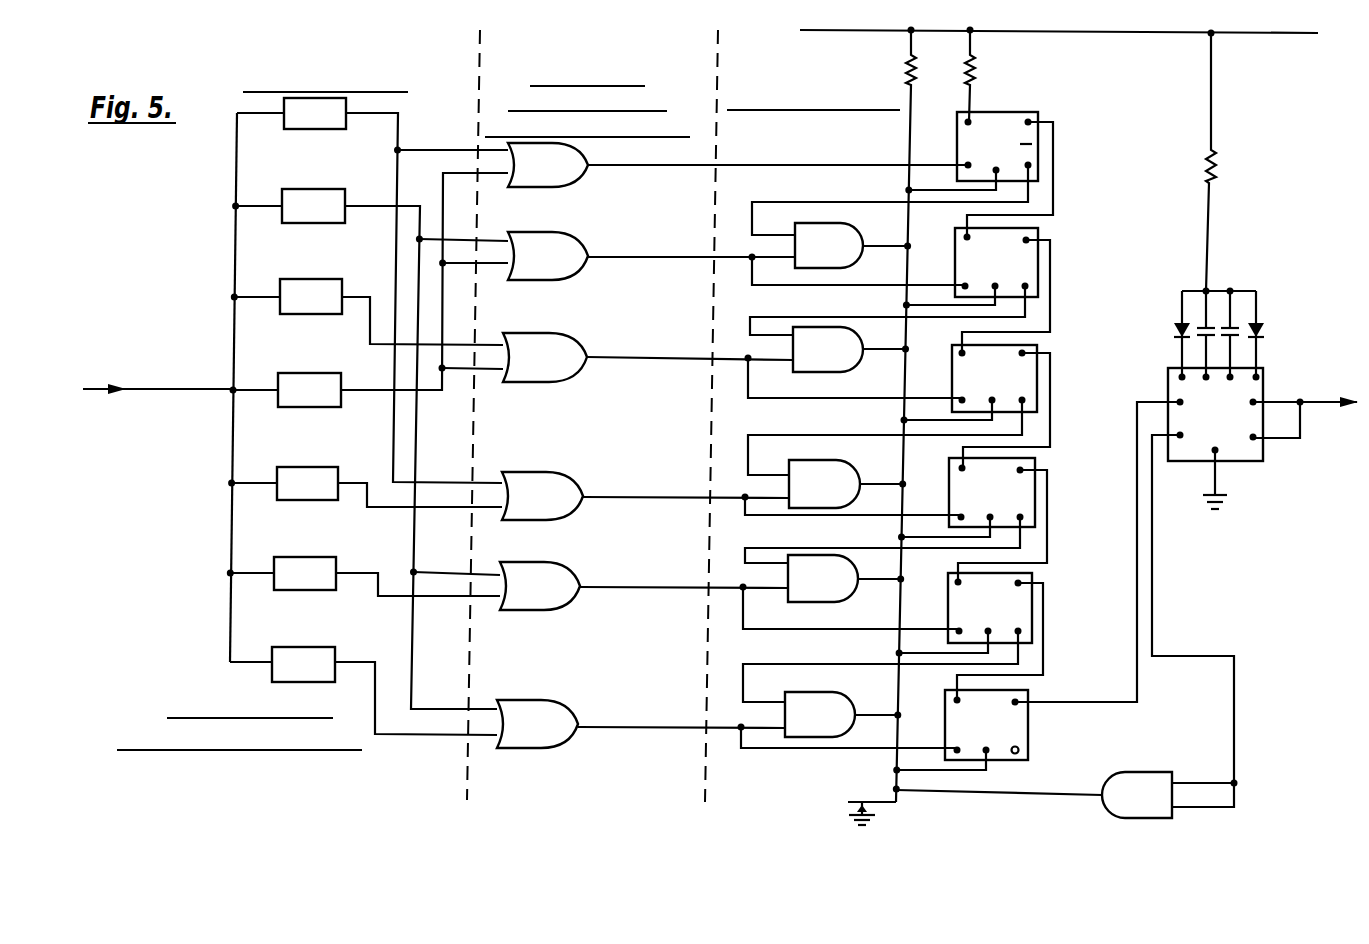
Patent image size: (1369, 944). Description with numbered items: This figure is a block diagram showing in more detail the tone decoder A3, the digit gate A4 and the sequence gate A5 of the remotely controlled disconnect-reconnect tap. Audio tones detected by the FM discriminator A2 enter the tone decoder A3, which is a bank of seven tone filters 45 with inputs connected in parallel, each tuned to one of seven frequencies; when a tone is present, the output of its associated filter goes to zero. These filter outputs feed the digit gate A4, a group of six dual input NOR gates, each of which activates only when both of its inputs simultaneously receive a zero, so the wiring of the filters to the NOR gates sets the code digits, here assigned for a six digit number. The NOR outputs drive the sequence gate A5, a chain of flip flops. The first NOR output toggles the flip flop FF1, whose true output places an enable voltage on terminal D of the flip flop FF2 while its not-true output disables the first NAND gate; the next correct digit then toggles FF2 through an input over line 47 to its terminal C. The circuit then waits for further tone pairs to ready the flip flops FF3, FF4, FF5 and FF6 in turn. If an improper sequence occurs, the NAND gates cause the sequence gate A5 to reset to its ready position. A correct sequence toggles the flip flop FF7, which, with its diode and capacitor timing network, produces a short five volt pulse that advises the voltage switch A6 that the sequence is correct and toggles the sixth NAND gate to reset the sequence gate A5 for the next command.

The tone filters 45 is at (312, 189).
The line 47 is at (803, 284).
The FM discriminator A2 is at (158, 345).
The tone decoder A3 is at (346, 66).
The digit gate A4 is at (603, 65).
The sequence gate A5 is at (829, 74).
The voltage switch A6 is at (1306, 383).
The flip flop FF1 is at (1029, 146).
The flip flop FF2 is at (1029, 262).
The flip flop FF3 is at (1025, 378).
The flip flop FF4 is at (1024, 492).
The flip flop FF5 is at (1022, 608).
The flip flop FF6 is at (1015, 725).
The flip flop FF7 is at (1236, 399).